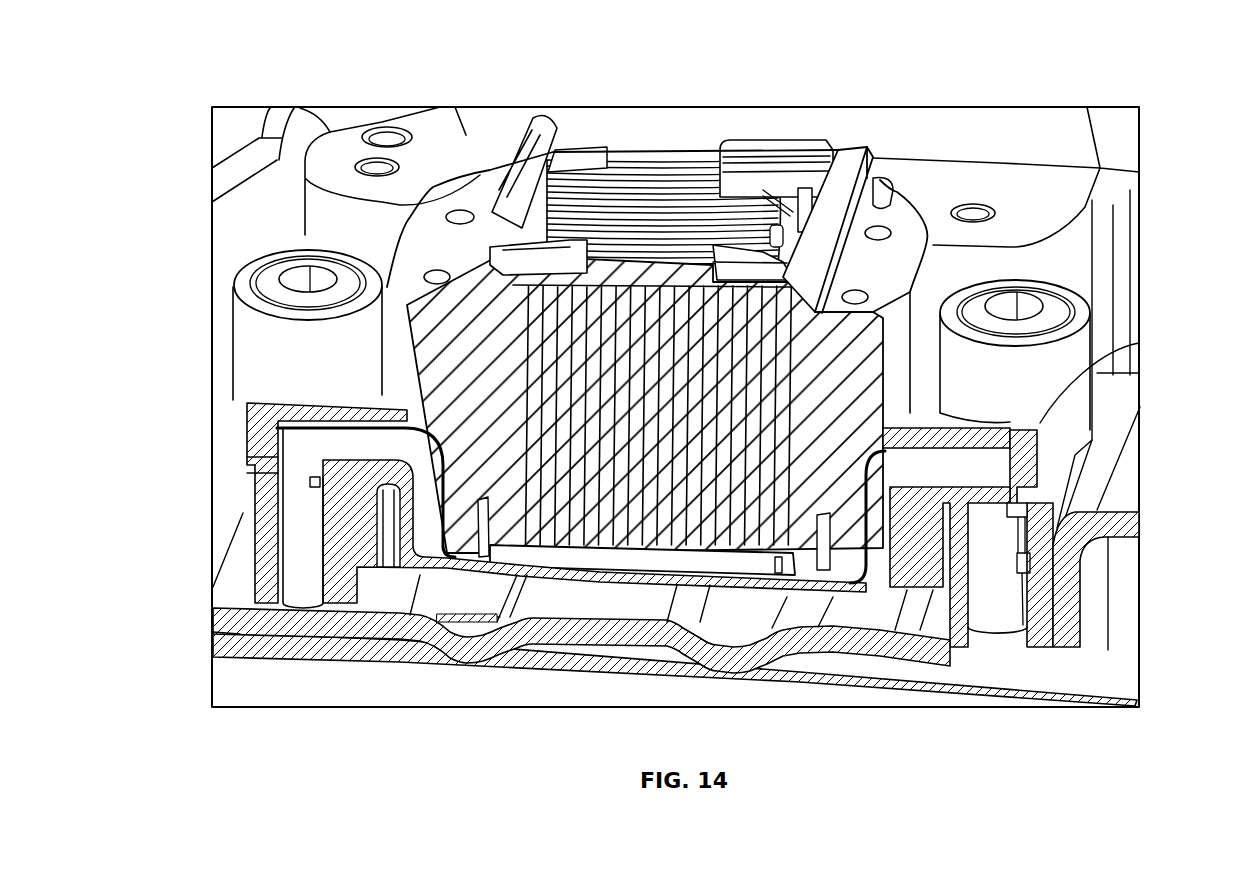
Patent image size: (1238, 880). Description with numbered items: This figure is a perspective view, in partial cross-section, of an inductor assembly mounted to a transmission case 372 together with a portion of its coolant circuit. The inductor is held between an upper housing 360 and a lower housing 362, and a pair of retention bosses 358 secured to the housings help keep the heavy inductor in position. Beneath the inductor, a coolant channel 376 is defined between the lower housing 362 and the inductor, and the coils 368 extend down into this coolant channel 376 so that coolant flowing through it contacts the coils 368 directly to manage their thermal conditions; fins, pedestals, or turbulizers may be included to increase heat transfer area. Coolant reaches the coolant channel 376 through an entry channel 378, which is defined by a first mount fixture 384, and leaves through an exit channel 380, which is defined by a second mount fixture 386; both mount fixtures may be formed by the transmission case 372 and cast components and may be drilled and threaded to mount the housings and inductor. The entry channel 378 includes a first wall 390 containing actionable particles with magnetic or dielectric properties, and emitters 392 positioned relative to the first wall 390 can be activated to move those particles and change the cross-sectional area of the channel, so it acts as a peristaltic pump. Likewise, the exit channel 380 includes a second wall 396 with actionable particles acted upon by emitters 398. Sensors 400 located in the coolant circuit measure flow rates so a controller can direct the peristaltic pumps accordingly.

The retention bosses 358 is at (235, 322).
The upper housing 360 is at (907, 243).
The lower housing 362 is at (363, 545).
The coils 368 is at (697, 165).
The transmission case 372 is at (880, 678).
The coolant channel 376 is at (553, 563).
The entry channel 378 is at (1037, 430).
The exit channel 380 is at (297, 466).
The first mount fixture 384 is at (1063, 494).
The second mount fixture 386 is at (240, 517).
The first wall 390 is at (1025, 575).
The emitters 392 is at (1040, 590).
The second wall 396 is at (214, 652).
The emitters 398 is at (245, 582).
The sensors 400 is at (310, 481).